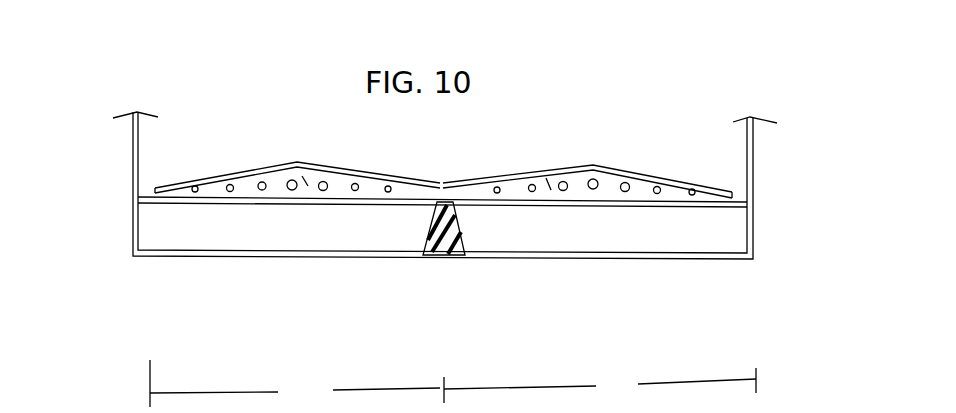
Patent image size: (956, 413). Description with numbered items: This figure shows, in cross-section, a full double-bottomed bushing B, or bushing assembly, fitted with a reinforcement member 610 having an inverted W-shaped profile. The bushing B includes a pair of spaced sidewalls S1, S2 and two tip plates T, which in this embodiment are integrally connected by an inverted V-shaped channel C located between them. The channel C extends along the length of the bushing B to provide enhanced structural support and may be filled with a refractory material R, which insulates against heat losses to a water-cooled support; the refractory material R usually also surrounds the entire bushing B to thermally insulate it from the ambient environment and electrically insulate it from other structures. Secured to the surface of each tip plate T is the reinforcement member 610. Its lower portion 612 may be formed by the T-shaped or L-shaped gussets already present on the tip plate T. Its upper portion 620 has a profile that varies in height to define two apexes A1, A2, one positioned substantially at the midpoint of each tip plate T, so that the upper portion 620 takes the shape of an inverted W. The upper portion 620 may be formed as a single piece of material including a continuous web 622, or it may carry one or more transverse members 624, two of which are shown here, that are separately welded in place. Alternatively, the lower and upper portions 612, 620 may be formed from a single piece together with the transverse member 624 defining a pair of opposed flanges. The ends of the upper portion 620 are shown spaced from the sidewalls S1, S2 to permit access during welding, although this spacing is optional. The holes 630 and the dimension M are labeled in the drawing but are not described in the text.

The reinforcement member 610 is at (296, 97).
The lower portion 612 is at (128, 197).
The upper portion 620 is at (122, 150).
The continuous web 622 is at (177, 188).
The transverse member 624 is at (222, 182).
The holes 630 is at (300, 182).
The refractory material R is at (440, 257).
The inverted V-shaped channel C is at (445, 192).
The apex A1 is at (291, 162).
The apex A2 is at (588, 165).
The bushing B is at (645, 78).
The sidewall S1 is at (130, 130).
The sidewall S2 is at (753, 213).
The tip plate T is at (265, 256).
The width M is at (453, 386).